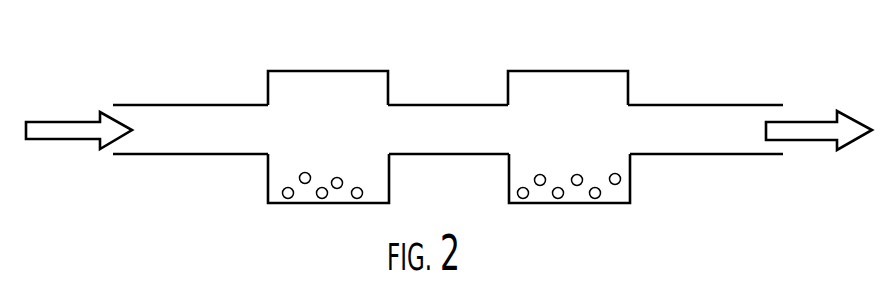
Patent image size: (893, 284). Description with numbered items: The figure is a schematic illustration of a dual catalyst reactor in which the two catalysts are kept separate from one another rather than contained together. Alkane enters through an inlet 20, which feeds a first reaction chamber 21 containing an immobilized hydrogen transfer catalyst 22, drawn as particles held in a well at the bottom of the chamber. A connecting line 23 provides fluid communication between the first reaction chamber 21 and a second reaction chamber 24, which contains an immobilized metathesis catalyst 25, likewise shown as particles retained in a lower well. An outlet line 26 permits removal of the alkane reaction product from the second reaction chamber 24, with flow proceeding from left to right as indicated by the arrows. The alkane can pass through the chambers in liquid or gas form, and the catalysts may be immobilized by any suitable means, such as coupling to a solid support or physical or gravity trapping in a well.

The inlet 20 is at (148, 105).
The first reaction chamber 21 is at (318, 71).
The immobilized hydrogen transfer catalyst 22 is at (268, 189).
The connecting line 23 is at (412, 103).
The second reaction chamber 24 is at (574, 70).
The immobilized metathesis catalyst 25 is at (619, 172).
The outlet line 26 is at (692, 104).